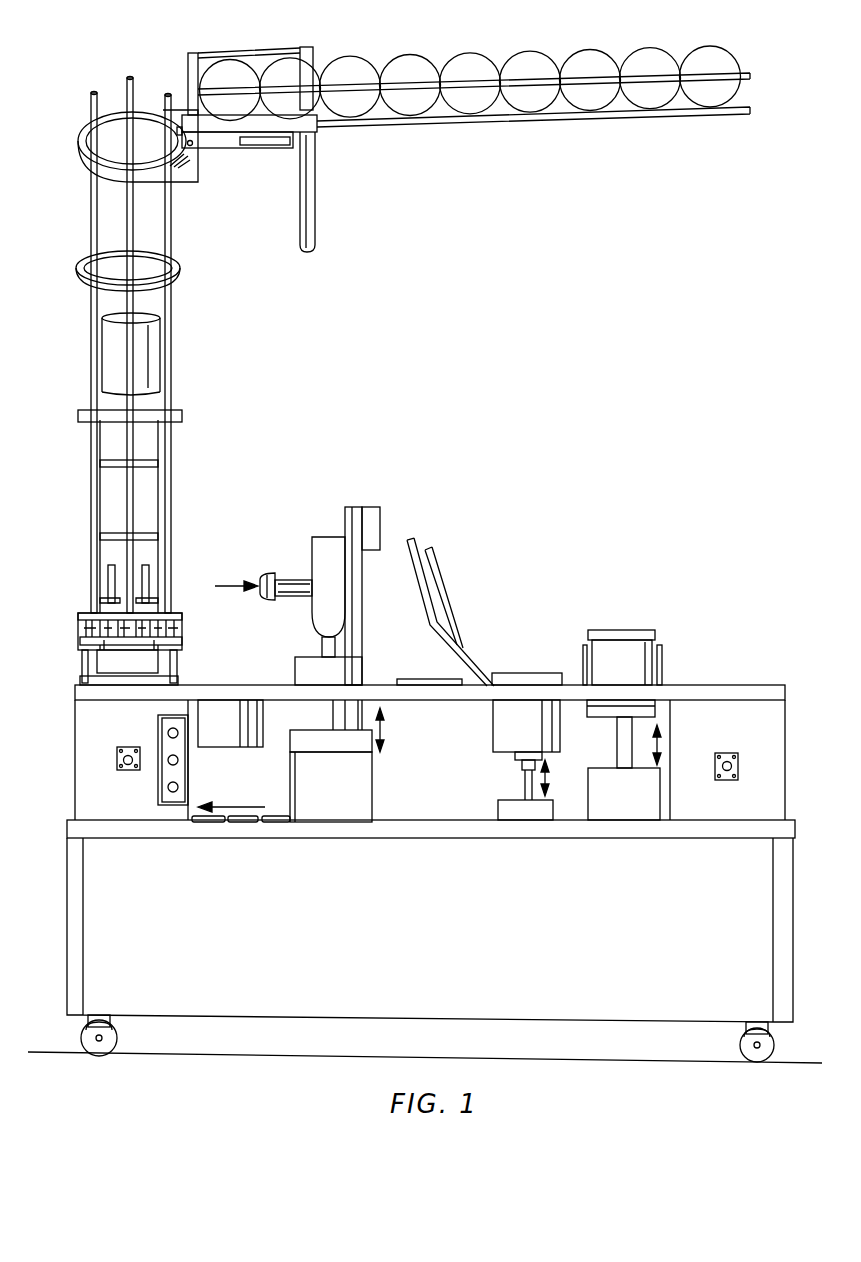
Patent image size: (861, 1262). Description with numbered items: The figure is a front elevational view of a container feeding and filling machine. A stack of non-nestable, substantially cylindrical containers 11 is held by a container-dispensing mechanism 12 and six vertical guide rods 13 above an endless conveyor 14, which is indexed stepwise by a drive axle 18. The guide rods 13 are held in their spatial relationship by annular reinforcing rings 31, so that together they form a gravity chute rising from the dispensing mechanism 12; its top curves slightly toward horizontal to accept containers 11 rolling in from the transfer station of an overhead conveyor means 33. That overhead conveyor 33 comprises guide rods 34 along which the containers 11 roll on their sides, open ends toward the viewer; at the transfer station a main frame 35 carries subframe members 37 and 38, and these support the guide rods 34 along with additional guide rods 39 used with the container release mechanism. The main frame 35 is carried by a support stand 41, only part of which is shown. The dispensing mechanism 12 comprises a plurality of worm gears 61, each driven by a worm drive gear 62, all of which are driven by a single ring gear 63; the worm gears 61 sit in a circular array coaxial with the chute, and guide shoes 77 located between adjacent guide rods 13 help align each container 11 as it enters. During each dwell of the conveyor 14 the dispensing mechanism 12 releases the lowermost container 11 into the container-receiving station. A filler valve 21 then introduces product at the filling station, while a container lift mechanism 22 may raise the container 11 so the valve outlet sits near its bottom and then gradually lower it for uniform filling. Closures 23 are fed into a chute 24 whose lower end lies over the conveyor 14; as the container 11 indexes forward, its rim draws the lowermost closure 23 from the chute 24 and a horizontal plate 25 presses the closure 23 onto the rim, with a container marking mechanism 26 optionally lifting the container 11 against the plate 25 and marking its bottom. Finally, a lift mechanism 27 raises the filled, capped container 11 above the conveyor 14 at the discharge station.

The containers 11 is at (150, 350).
The container-dispensing mechanism 12 is at (78, 633).
The vertical guide rods 13 is at (90, 306).
The endless conveyor 14 is at (274, 815).
The drive axle 18 is at (125, 770).
The filler valve 21 is at (312, 620).
The container lift mechanism 22 is at (372, 778).
The closures 23 is at (633, 630).
The chute 24 is at (455, 584).
The horizontal plate 25 is at (534, 673).
The container marking mechanism 26 is at (498, 800).
The lift mechanism 27 is at (588, 798).
The annular reinforcing rings 31 is at (80, 152).
The overhead conveyor means 33 is at (449, 130).
The guide rods 34 is at (752, 73).
The main frame 35 is at (206, 140).
The subframe member 37 is at (188, 52).
The subframe member 38 is at (313, 52).
The additional guide rods 39 is at (232, 52).
The support stand 41 is at (316, 166).
The worm gears 61 is at (80, 615).
The worm drive gear 62 is at (90, 641).
The ring gear 63 is at (160, 638).
The guide shoes 77 is at (82, 570).